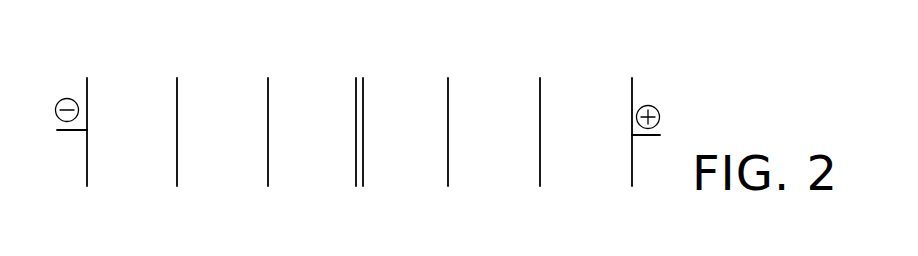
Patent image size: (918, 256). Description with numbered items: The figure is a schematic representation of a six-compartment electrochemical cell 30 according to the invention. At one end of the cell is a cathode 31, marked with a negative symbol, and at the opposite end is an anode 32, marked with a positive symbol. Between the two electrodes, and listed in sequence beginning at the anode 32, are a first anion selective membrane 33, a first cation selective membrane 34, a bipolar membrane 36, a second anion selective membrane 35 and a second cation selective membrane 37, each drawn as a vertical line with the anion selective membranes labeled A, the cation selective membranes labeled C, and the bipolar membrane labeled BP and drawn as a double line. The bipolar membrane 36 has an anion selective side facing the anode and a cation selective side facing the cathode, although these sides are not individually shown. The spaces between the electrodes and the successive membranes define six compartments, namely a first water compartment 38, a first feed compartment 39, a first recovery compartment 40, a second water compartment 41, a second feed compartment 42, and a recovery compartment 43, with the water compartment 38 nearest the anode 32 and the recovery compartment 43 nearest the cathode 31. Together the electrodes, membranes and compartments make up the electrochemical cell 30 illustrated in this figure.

The electrochemical cell 30 is at (639, 44).
The cathode 31 is at (87, 92).
The anode 32 is at (632, 88).
The first anion selective membrane 33 is at (540, 97).
The first cation selective membrane 34 is at (448, 92).
The second anion selective membrane 35 is at (268, 92).
The bipolar membrane 36 is at (363, 97).
The second cation selective membrane 37 is at (177, 90).
The first water compartment 38 is at (592, 173).
The first feed compartment 39 is at (508, 172).
The first recovery compartment 40 is at (415, 168).
The second water compartment 41 is at (315, 168).
The second feed compartment 42 is at (230, 168).
The recovery compartment 43 is at (140, 163).